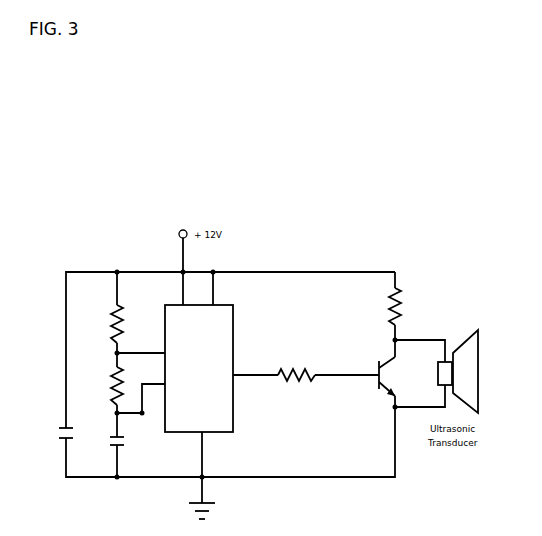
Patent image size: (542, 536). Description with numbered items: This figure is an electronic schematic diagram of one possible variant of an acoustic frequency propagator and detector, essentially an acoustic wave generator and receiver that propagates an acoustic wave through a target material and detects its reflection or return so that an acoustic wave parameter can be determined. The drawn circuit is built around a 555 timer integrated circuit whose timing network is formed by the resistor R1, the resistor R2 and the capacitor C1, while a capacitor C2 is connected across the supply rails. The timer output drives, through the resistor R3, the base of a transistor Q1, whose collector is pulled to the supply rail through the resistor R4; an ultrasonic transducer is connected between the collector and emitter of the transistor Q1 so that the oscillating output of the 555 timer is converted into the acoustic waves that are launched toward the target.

The 555 timer IC 555 is at (198, 370).
The resistor 10 K R1 is at (98, 312).
The resistor 1 K R2 is at (100, 383).
The resistor 1.2 K R3 is at (296, 393).
The resistor 2.2 K R4 is at (411, 306).
The capacitor 0.0033 C1 is at (133, 445).
The capacitor 0.1 C2 is at (55, 434).
The transistor 2N2222 Q1 is at (370, 370).